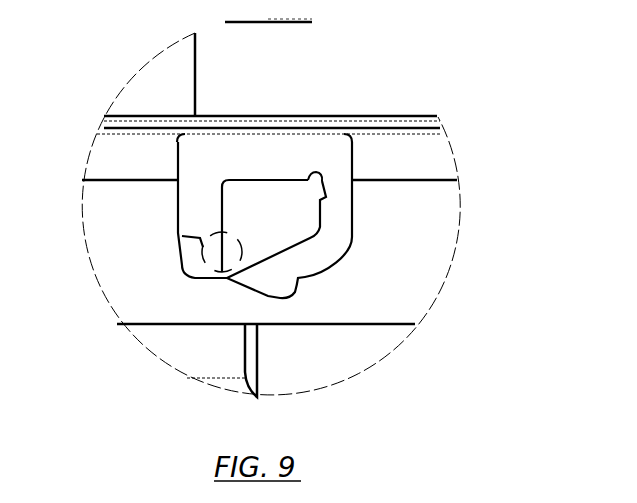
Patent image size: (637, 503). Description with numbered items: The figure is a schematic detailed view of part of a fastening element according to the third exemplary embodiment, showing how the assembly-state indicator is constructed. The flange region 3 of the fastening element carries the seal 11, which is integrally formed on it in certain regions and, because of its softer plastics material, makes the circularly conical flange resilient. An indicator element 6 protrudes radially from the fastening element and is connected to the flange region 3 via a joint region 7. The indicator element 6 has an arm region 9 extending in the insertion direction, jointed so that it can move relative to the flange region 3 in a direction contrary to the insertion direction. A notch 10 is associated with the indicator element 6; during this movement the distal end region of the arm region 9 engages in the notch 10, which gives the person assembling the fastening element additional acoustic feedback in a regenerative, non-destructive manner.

The flange region 3 is at (430, 162).
The indicator element 6 is at (274, 229).
The joint region 7 is at (317, 177).
The arm region 9 is at (283, 280).
The notch 10 is at (182, 236).
The seal 11 is at (430, 240).